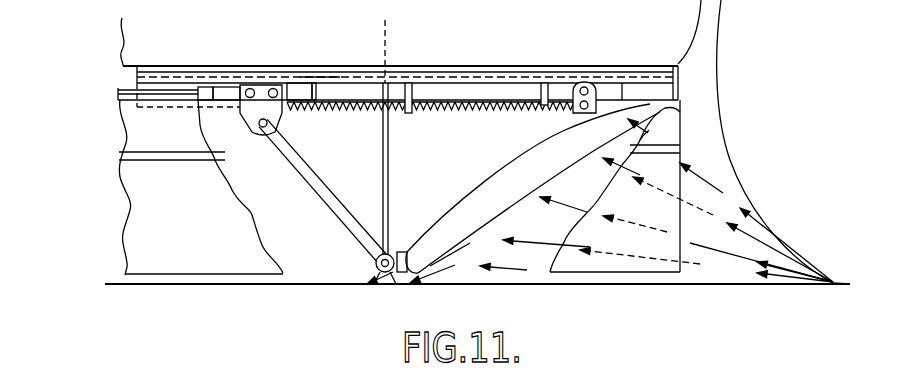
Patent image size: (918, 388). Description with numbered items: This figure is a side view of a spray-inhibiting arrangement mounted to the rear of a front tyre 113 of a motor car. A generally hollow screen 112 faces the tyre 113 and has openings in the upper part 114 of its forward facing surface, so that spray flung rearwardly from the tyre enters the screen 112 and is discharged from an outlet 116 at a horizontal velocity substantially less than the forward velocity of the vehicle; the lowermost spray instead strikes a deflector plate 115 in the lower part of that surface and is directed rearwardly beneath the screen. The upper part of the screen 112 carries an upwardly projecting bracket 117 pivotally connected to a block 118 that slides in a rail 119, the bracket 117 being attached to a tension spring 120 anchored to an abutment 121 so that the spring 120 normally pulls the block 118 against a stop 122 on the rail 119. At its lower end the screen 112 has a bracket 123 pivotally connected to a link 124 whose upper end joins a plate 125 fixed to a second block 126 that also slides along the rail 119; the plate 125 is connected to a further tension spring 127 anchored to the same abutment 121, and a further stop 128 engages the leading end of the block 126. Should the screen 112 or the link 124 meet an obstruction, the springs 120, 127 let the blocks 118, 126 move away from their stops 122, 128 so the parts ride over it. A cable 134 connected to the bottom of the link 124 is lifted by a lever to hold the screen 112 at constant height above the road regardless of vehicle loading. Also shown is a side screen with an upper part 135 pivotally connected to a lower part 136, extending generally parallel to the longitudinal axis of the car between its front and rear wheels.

The screen 112 is at (468, 220).
The front tyre 113 is at (723, 8).
The upper part of forward facing surface 114 is at (593, 180).
The deflector plate 115 is at (458, 257).
The outlet 116 is at (390, 276).
The upwardly projecting bracket 117 is at (607, 77).
The block 118 is at (563, 88).
The rail 119 is at (463, 78).
The tension spring 120 is at (517, 104).
The abutment 121 is at (408, 83).
The stop 122 is at (543, 88).
The bracket 123 is at (390, 253).
The link 124 is at (317, 180).
The plate 125 is at (245, 100).
The block 126 is at (297, 90).
The further tension spring 127 is at (325, 112).
The further stop 128 is at (317, 83).
The cable 134 is at (389, 142).
The upper part of side screen 135 is at (133, 127).
The lower part of side screen 136 is at (142, 228).